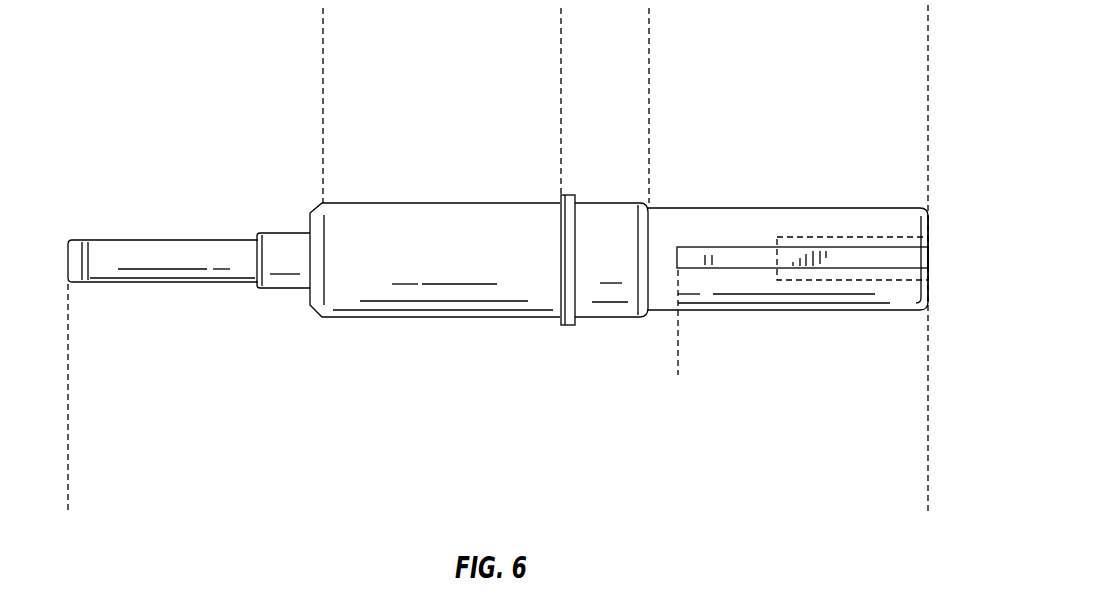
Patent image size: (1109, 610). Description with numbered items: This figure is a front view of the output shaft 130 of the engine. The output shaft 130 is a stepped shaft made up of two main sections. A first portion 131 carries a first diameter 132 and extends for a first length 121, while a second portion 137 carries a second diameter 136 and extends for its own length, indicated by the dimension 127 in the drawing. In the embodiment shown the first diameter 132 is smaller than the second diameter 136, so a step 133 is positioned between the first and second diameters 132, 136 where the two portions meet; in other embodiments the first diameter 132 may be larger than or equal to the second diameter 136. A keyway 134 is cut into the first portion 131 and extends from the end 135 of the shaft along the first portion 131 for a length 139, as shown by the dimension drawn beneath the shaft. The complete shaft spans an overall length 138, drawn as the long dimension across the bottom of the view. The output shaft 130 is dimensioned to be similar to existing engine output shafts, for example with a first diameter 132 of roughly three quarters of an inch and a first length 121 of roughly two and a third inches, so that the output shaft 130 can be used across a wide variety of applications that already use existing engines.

The output shaft 130 is at (116, 189).
The second portion 137 is at (384, 197).
The second diameter 136 is at (467, 197).
The step 133 is at (621, 197).
The first portion 131 is at (691, 198).
The keyway 134 is at (746, 256).
The first diameter 132 is at (879, 198).
The end 135 is at (930, 226).
The housing length 127 is at (559, 56).
The first length 121 is at (926, 56).
The length 139 is at (926, 352).
The overall length 138 is at (926, 480).